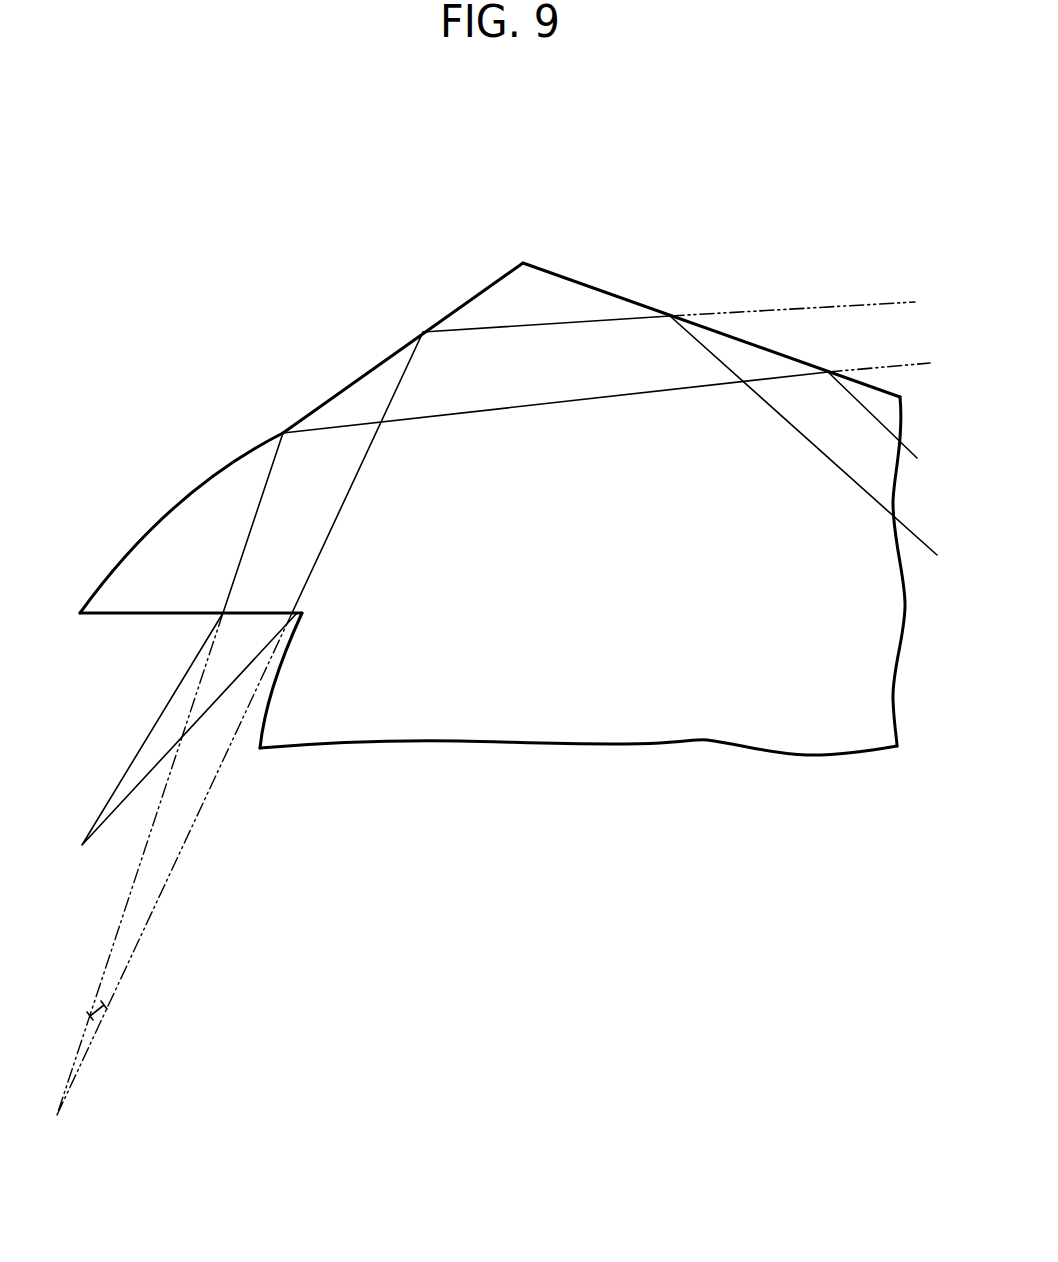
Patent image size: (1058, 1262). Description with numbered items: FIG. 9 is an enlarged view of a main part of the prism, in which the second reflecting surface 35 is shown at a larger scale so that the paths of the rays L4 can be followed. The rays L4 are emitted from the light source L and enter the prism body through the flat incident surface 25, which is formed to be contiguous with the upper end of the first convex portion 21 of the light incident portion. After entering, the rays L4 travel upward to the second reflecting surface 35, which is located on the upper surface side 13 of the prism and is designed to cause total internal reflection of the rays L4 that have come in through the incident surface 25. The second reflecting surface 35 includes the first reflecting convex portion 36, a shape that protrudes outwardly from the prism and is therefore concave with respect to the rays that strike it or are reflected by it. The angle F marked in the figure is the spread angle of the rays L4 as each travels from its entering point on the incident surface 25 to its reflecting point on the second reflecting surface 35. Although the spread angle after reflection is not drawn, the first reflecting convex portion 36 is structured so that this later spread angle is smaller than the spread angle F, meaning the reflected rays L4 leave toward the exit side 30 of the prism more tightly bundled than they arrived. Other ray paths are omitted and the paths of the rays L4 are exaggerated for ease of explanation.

The upper surface side 13 is at (592, 203).
The first convex portion 21 is at (263, 700).
The incident surface 25 is at (177, 615).
The exit surface 30 is at (610, 292).
The second reflecting surface 35 is at (188, 507).
The first reflecting convex portion 36 is at (282, 375).
The light source L is at (183, 738).
The rays L4 is at (590, 321).
The angle F is at (112, 1000).